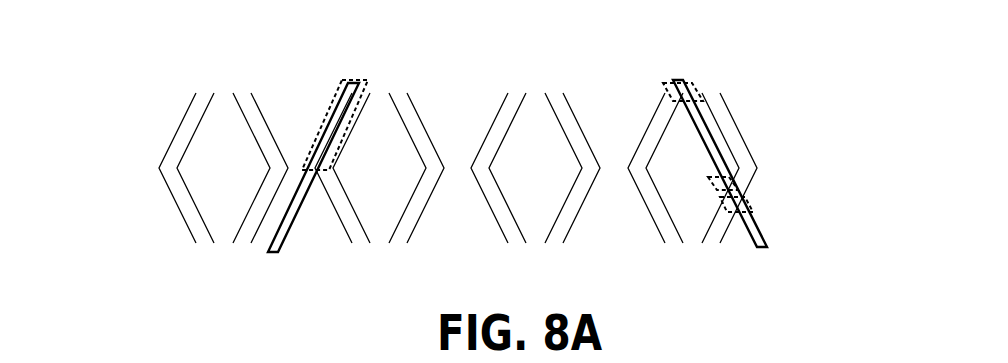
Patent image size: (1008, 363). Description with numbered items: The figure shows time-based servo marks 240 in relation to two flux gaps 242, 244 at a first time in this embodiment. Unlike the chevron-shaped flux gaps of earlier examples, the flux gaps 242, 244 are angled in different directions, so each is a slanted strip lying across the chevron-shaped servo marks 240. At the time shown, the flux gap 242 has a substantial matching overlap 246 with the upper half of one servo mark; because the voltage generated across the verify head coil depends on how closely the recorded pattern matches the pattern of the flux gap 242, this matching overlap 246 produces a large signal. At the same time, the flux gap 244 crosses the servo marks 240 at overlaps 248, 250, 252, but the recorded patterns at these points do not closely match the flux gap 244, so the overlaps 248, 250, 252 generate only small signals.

The time-based servo marks 240 is at (132, 148).
The flux gap 242 is at (268, 252).
The flux gap 244 is at (767, 247).
The matching overlap 246 is at (351, 74).
The overlap 248 is at (692, 78).
The overlap 250 is at (739, 170).
The overlap 252 is at (750, 187).